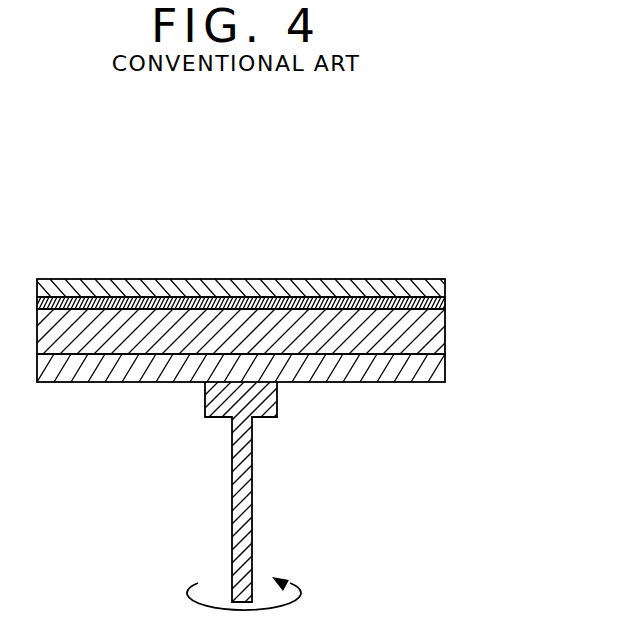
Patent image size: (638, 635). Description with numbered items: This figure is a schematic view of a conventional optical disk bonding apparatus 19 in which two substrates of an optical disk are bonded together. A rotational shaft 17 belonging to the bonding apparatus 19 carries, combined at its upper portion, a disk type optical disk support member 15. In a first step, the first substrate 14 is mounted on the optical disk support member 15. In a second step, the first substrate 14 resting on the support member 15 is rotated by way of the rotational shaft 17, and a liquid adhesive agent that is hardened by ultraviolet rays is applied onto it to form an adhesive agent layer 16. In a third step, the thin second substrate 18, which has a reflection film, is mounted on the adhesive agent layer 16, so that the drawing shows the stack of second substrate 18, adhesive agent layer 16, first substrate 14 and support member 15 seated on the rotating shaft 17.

The optical disk bonding apparatus 19 is at (268, 270).
The second substrate 18 is at (445, 280).
The adhesive agent layer 16 is at (445, 300).
The first substrate 14 is at (445, 332).
The optical disk support member 15 is at (437, 366).
The rotational shaft 17 is at (250, 472).